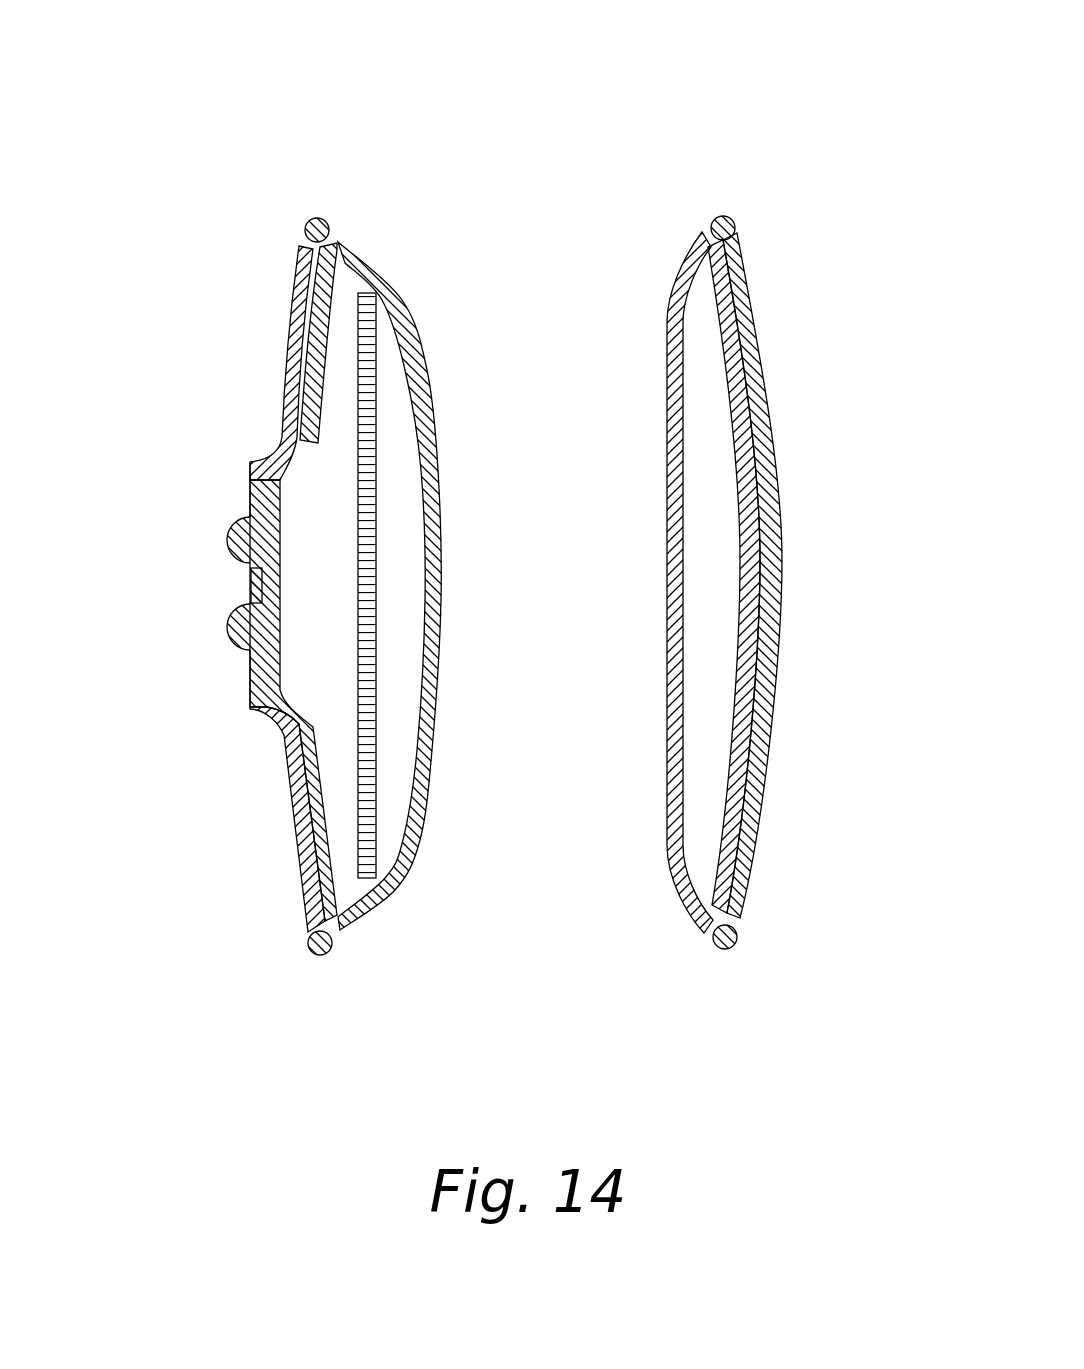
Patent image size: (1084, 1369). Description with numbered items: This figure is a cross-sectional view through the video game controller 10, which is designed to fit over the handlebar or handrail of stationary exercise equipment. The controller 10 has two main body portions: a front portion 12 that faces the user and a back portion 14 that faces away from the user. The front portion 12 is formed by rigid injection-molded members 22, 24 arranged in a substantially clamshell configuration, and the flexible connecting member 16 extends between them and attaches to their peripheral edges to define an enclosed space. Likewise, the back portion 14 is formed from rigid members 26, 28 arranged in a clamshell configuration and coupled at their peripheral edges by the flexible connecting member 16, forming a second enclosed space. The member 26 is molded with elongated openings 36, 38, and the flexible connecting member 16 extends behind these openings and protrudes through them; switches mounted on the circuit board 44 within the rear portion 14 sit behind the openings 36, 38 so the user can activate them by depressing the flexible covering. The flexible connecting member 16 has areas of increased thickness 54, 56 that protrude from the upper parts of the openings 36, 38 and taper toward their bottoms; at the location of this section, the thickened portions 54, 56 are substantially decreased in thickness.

The controller 10 is at (226, 153).
The front portion 12 is at (730, 654).
The back portion 14 is at (326, 616).
The flexible connecting member 16 is at (319, 217).
The member 22 is at (783, 557).
The member 24 is at (665, 482).
The member 26 is at (288, 376).
The member 28 is at (438, 798).
The elongated opening 36 is at (230, 500).
The elongated opening 38 is at (226, 672).
The circuit board 44 is at (356, 462).
The area of increased thickness 54 is at (228, 540).
The area of increased thickness 56 is at (228, 626).